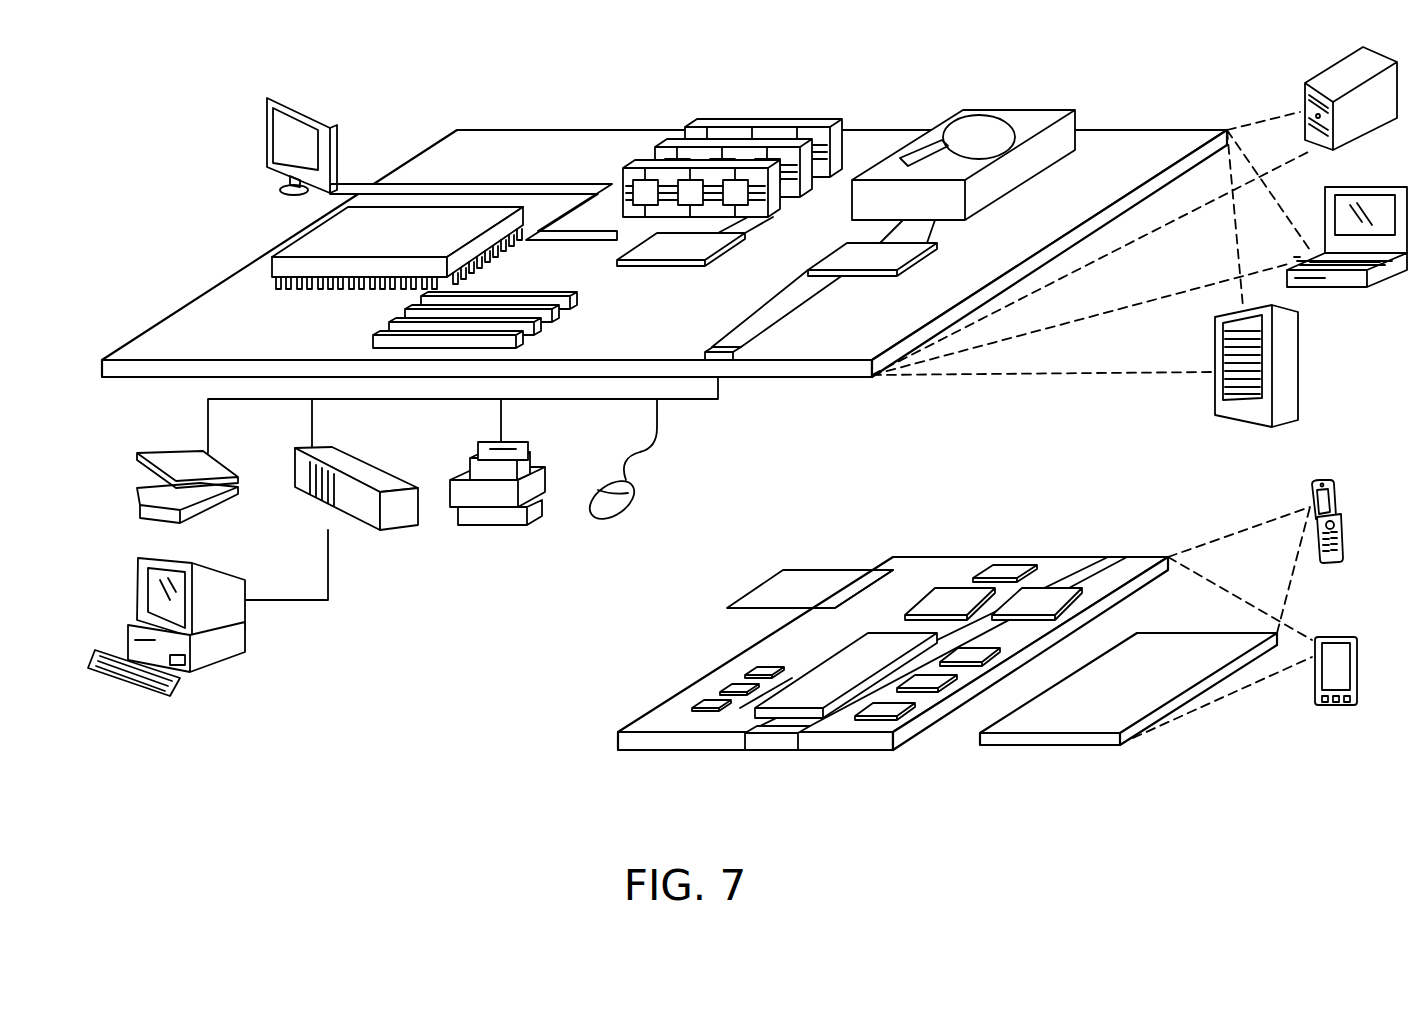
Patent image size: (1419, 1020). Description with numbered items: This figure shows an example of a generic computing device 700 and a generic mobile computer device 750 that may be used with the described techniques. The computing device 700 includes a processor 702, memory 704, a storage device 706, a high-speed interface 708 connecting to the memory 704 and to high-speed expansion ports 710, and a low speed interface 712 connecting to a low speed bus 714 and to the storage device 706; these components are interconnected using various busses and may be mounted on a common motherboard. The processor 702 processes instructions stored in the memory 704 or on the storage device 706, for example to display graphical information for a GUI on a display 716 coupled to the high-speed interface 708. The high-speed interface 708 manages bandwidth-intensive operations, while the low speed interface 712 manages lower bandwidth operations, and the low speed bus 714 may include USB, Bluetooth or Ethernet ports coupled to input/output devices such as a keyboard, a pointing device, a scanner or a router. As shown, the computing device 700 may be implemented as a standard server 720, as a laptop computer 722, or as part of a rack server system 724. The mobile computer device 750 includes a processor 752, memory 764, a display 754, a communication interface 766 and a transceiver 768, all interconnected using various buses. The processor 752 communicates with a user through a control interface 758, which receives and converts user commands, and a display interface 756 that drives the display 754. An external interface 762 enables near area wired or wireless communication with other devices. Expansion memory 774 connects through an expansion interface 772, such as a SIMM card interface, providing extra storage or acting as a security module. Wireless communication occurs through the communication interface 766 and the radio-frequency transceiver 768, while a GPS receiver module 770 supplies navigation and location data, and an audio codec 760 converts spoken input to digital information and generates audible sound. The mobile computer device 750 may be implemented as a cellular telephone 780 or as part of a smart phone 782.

The computing device 700 is at (403, 74).
The processor 702 is at (295, 240).
The memory 704 is at (766, 128).
The storage device 706 is at (1005, 108).
The high-speed interface 708 is at (697, 243).
The high-speed expansion ports 710 is at (400, 322).
The low speed interface 712 is at (843, 250).
The low speed bus 714 is at (723, 348).
The display 716 is at (270, 97).
The standard server 720 is at (1325, 78).
The laptop computer 722 is at (1383, 185).
The rack server system 724 is at (1300, 365).
The mobile computer device 750 is at (570, 760).
The processor 752 is at (812, 680).
The display 754 is at (1168, 645).
The display interface 756 is at (900, 706).
The control interface 758 is at (938, 681).
The audio codec 760 is at (982, 650).
The external interface 762 is at (773, 740).
The memory 764 is at (727, 688).
The communication interface 766 is at (950, 592).
The transceiver 768 is at (1046, 594).
The GPS receiver module 770 is at (1003, 565).
The expansion interface 772 is at (873, 567).
The expansion memory 774 is at (782, 565).
The cellular telephone 780 is at (1318, 480).
The smart phone 782 is at (1334, 632).